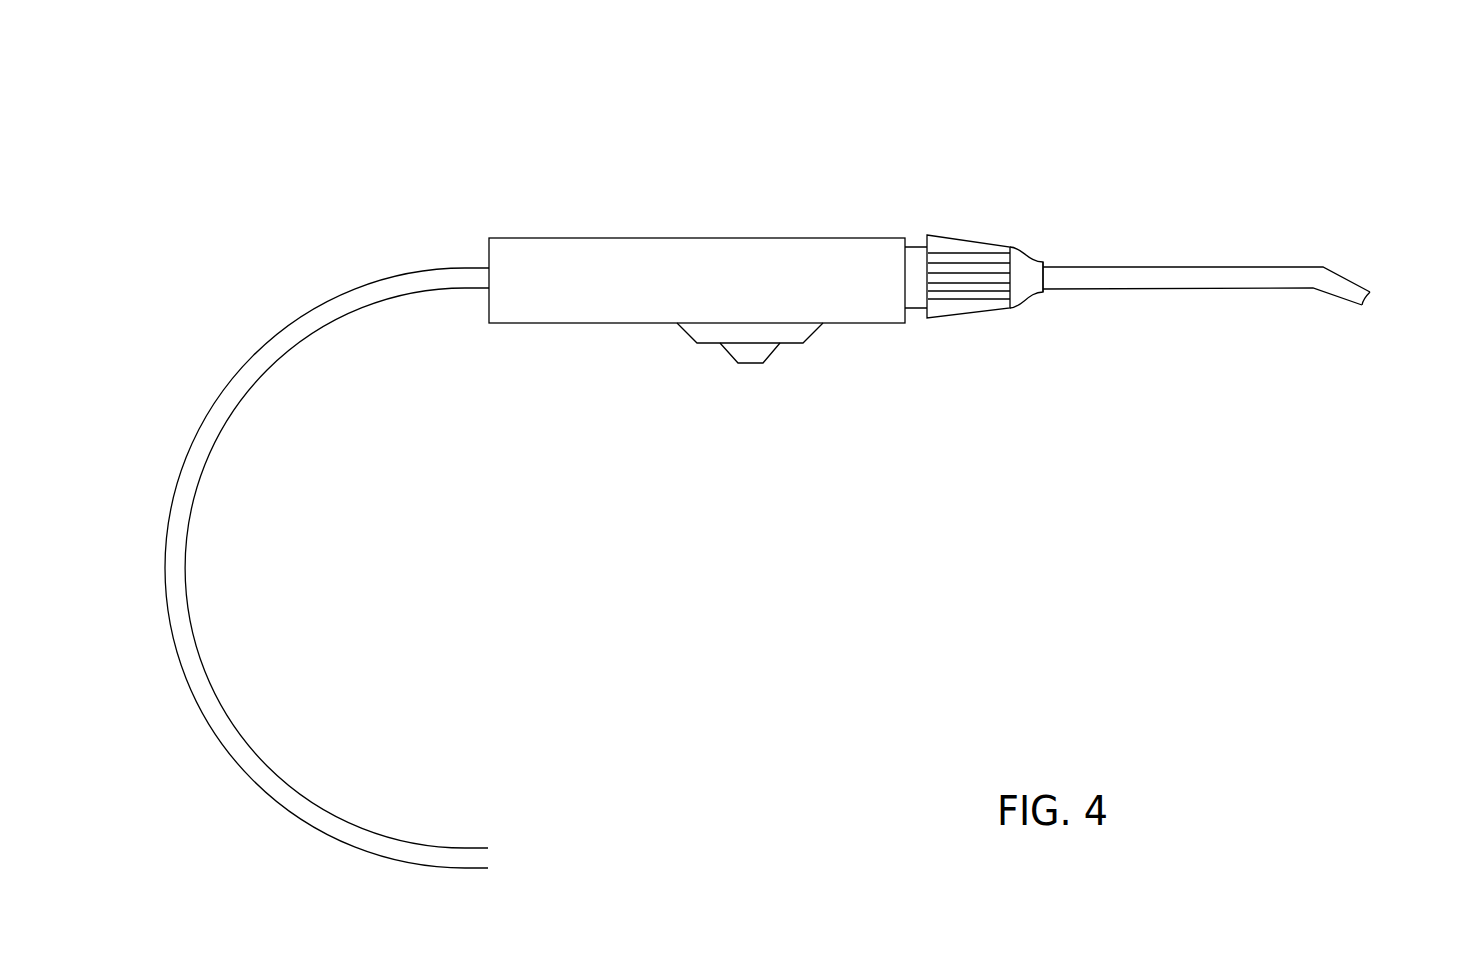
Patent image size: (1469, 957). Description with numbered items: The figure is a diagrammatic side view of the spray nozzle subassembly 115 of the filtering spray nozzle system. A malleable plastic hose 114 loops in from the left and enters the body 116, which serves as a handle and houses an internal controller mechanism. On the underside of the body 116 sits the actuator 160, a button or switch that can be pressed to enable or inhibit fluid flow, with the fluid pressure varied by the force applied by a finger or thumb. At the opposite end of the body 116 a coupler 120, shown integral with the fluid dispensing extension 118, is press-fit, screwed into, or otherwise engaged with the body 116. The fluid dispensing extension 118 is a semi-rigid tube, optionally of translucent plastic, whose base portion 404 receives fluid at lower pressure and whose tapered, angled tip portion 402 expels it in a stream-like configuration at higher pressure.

The hose 114 is at (177, 575).
The nozzle subassembly 115 is at (1143, 152).
The body 116 is at (772, 258).
The fluid dispensing extension 118 is at (1282, 275).
The coupler 120 is at (965, 320).
The actuator 160 is at (775, 350).
The tip portion 402 is at (1355, 290).
The base portion 404 is at (1053, 276).